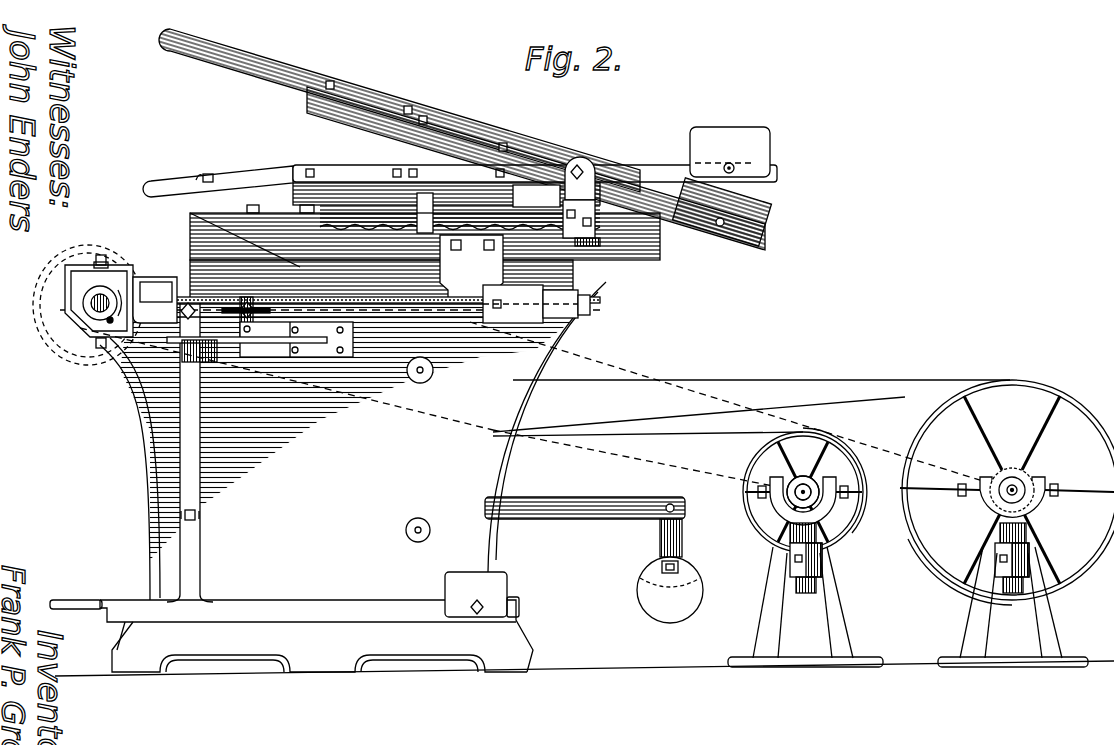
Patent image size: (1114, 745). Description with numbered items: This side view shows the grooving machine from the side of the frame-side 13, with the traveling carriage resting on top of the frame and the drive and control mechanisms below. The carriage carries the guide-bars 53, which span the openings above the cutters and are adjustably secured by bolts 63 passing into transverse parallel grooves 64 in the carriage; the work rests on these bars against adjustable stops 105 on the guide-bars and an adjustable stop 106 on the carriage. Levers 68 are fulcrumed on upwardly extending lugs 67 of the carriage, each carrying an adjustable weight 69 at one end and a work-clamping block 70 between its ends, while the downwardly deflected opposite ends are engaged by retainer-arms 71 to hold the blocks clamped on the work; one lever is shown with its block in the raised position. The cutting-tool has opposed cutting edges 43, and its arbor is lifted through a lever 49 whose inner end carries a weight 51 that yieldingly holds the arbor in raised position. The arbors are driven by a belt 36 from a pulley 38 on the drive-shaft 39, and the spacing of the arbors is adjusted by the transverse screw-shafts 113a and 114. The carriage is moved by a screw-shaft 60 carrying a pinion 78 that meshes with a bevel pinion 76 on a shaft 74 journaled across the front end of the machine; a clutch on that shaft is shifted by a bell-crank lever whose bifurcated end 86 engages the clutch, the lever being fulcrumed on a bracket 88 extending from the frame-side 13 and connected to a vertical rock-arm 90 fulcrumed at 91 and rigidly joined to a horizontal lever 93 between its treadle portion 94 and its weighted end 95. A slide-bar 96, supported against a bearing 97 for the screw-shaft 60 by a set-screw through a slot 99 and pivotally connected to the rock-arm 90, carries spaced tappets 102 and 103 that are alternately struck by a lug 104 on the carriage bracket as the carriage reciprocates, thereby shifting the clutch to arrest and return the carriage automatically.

The frame side-member 13 is at (353, 441).
The belt 36 is at (773, 388).
The pulley 38 is at (997, 382).
The drive-shaft 39 is at (1000, 505).
The cutting edges 43 is at (307, 205).
The lever 49 is at (617, 519).
The weight 51 is at (668, 604).
The guide-bars 53 is at (353, 227).
The screw-shaft 60 is at (430, 300).
The bolts 63 is at (250, 206).
The transverse parallel grooves 64 is at (192, 216).
The lugs 67 is at (588, 180).
The levers 68 is at (290, 83).
The weight 69 is at (775, 172).
The work-clamping block 70 is at (370, 108).
The retainer-arms 71 is at (204, 176).
The shaft 74 is at (88, 312).
The bevel pinion 76 is at (100, 262).
The pinion 78 is at (106, 325).
The bifurcated end 86 is at (85, 333).
The bracket 88 is at (290, 358).
The rock-arm 90 is at (183, 456).
The fulcrum 91 is at (185, 516).
The horizontal lever 93 is at (270, 614).
The treadle portion 94 is at (80, 599).
The weighted end 95 is at (494, 592).
The slide-bar 96 is at (375, 312).
The bearing 97 is at (140, 292).
The slot 99 is at (160, 298).
The tappet 102 is at (252, 300).
The tappet 103 is at (540, 320).
The lug 104 is at (462, 300).
The adjustable stops 105 is at (543, 198).
The adjustable stop 106 is at (422, 195).
The screw-shaft 113a is at (426, 380).
The screw-shaft 114 is at (416, 526).